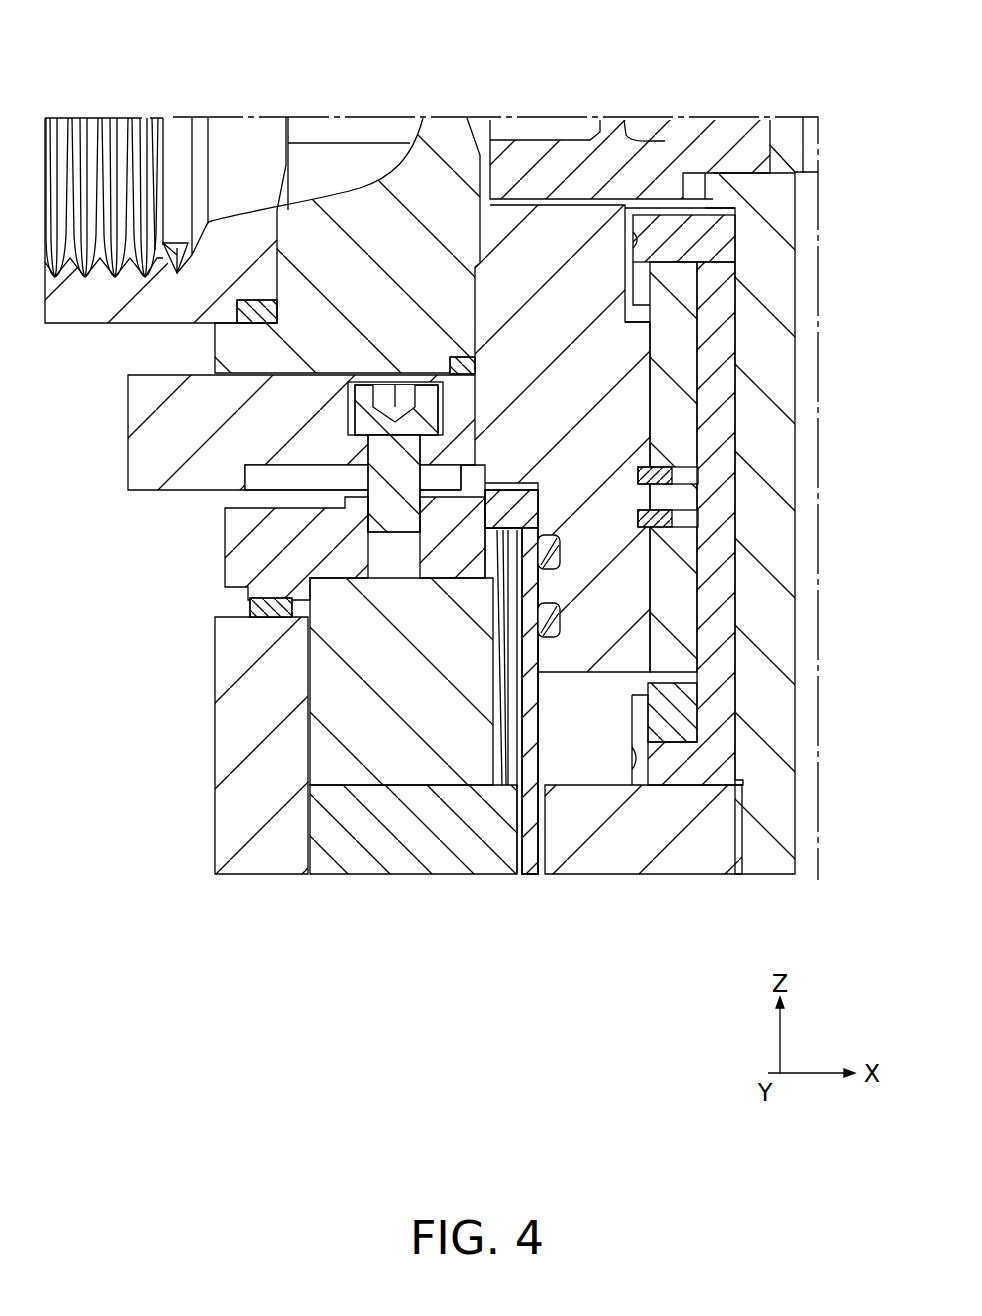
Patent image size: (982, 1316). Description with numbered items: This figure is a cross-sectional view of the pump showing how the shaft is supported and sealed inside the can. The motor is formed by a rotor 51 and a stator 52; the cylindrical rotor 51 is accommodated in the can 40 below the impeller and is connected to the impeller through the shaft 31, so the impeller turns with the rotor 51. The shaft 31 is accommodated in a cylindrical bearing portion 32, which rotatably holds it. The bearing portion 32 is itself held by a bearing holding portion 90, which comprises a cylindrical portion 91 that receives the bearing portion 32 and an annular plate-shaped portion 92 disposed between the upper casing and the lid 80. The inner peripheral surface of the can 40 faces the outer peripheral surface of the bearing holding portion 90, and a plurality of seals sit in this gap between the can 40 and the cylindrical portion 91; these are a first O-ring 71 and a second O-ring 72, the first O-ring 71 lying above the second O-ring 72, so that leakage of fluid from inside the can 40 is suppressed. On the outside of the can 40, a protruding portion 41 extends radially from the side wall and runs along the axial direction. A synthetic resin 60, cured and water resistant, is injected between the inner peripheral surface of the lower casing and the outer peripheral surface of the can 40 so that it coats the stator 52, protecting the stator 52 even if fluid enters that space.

The shaft 31 is at (781, 140).
The bearing portion 32 is at (715, 352).
The can 40 is at (518, 503).
The protruding portion 41 is at (513, 733).
The rotor 51 is at (637, 830).
The stator 52 is at (367, 833).
The synthetic resin 60 is at (343, 692).
The first O-ring 71 is at (553, 620).
The second O-ring 72 is at (556, 555).
The lid 80 is at (270, 547).
The bearing holding portion 90 is at (523, 271).
The cylindrical portion 91 is at (612, 592).
The plate-shaped portion 92 is at (143, 410).